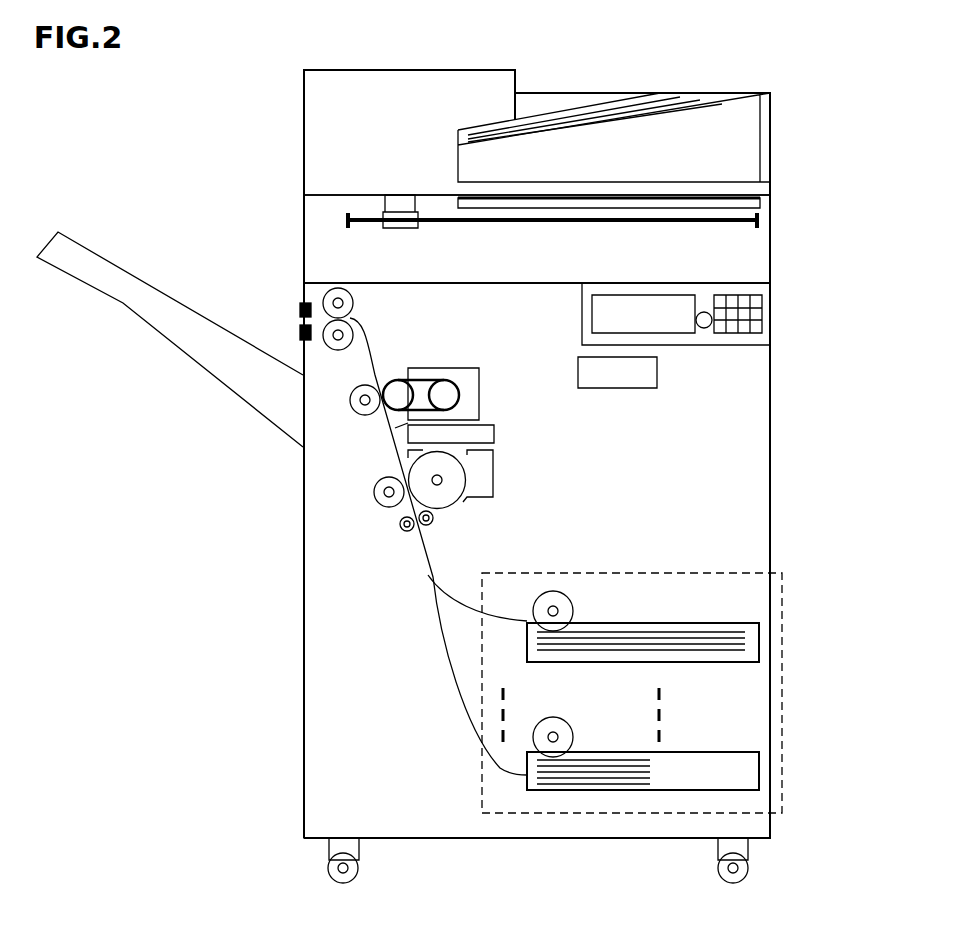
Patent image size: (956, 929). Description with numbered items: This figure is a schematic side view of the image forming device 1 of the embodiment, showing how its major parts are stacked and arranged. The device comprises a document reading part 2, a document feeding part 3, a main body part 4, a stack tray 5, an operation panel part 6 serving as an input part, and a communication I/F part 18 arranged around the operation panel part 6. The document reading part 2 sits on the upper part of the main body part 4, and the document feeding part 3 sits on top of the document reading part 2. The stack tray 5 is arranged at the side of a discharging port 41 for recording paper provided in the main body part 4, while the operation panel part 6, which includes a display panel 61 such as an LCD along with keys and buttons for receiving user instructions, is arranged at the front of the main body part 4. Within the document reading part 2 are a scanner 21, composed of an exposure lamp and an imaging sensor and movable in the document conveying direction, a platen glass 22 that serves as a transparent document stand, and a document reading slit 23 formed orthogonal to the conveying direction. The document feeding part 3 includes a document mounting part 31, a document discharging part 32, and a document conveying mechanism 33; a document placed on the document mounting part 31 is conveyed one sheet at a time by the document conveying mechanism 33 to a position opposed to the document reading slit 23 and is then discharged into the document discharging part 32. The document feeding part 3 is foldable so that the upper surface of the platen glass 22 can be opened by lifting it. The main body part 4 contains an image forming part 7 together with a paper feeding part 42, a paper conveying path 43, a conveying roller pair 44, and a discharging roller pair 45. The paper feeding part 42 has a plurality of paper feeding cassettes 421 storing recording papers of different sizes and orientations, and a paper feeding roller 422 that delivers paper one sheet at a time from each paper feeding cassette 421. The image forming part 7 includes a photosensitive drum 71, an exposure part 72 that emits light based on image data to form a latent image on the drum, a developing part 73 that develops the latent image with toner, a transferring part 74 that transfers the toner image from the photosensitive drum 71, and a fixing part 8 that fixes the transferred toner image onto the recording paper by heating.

The image forming device 1 is at (240, 103).
The document reading part 2 is at (304, 232).
The document feeding part 3 is at (304, 133).
The main body part 4 is at (770, 533).
The stack tray 5 is at (197, 363).
The operation panel part 6 is at (765, 300).
The image forming part 7 is at (567, 436).
The fixing part 8 is at (478, 368).
The communication I/F part 18 is at (625, 388).
The scanner 21 is at (405, 230).
The platen glass 22 is at (752, 203).
The document reading slit 23 is at (403, 195).
The document mounting part 31 is at (675, 108).
The document discharging part 32 is at (641, 182).
The document conveying mechanism 33 is at (410, 73).
The discharging port 41 is at (300, 318).
The paper feeding part 42 is at (782, 625).
The paper conveying path 43 is at (407, 543).
The conveying roller pair 44 is at (398, 522).
The discharging roller pair 45 is at (355, 302).
The display panel 61 is at (670, 323).
The photosensitive drum 71 is at (450, 508).
The exposure part 72 is at (494, 430).
The developing part 73 is at (493, 465).
The transferring part 74 is at (374, 490).
The paper feeding cassette 421 is at (688, 623).
The paper feeding roller 422 is at (573, 610).